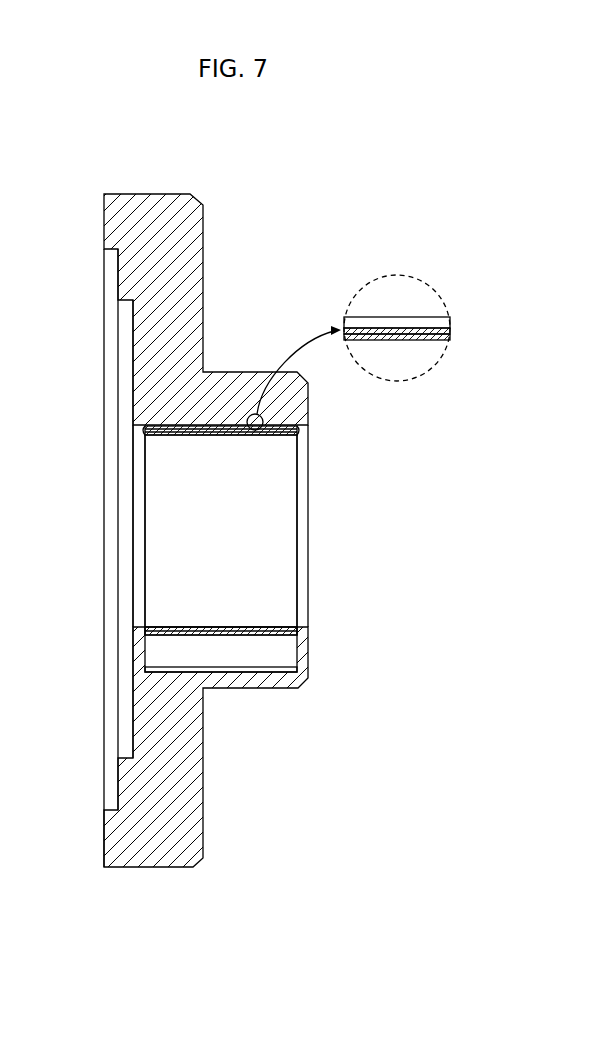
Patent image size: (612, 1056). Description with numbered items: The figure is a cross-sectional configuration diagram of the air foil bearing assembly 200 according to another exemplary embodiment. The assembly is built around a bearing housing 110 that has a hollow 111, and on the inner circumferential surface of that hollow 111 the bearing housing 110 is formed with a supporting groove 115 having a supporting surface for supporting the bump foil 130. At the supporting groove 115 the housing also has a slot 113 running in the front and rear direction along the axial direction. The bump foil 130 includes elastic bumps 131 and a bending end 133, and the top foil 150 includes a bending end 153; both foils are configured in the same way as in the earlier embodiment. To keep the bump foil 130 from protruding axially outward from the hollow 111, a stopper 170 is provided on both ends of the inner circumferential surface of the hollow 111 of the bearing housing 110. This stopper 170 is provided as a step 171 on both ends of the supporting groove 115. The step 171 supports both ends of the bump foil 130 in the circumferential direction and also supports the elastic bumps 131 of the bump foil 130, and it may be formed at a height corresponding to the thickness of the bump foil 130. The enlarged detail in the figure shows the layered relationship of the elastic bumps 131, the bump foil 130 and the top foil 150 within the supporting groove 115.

The air foil bearing assembly 200 is at (204, 142).
The bearing housing 110 is at (216, 204).
The hollow 111 is at (133, 528).
The slot 113 is at (223, 672).
The supporting groove 115 is at (200, 430).
The bump foil 130 is at (410, 341).
The elastic bumps 131 is at (392, 317).
The bending end 133 is at (258, 655).
The bending end 153 is at (221, 631).
The top foil 150 is at (371, 346).
The stopper 170 is at (126, 426).
The step 171 is at (142, 434).